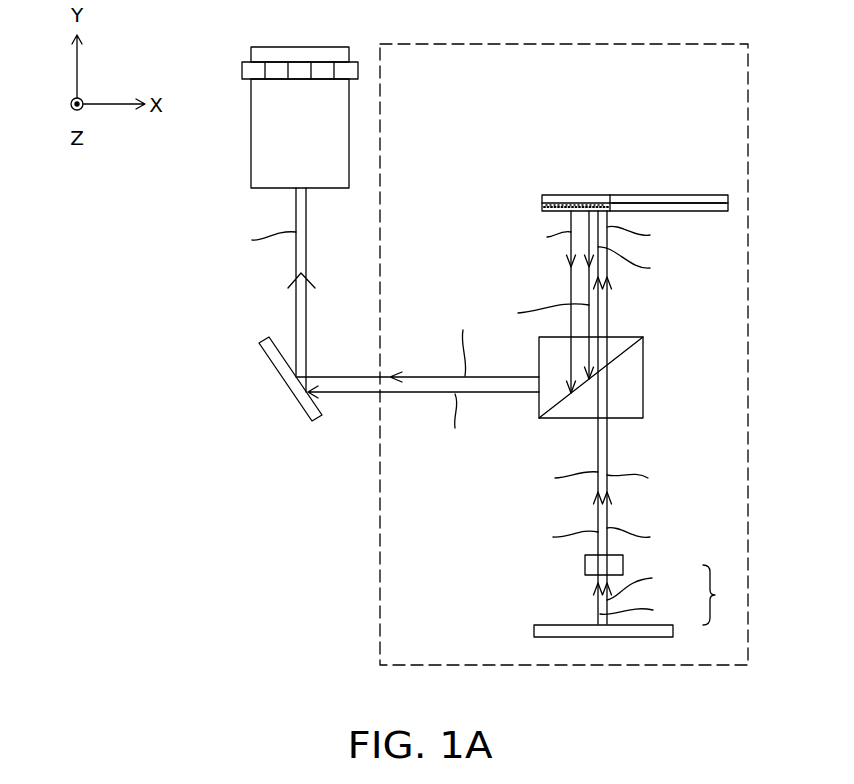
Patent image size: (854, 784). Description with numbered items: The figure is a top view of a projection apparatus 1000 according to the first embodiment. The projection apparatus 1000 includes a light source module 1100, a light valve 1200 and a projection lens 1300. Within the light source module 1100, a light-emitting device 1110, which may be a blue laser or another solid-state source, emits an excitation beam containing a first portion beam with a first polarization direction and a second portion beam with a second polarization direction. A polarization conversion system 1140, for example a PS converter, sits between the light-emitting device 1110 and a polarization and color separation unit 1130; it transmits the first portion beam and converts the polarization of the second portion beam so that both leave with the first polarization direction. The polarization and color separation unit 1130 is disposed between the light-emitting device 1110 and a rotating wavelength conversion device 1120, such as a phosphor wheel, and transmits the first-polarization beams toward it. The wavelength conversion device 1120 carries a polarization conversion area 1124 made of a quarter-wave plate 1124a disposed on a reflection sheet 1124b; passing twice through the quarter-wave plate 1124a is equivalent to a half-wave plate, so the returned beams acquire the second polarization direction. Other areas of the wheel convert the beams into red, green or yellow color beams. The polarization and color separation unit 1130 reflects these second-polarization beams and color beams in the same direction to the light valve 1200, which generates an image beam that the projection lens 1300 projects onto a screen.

The projection apparatus 1000 is at (197, 656).
The light source module 1100 is at (628, 44).
The light-emitting device 1110 is at (673, 630).
The wavelength conversion device 1120 is at (692, 183).
The polarization conversion area 1124 is at (587, 151).
The quarter-wave plate 1124a is at (540, 207).
The reflection sheet 1124b is at (616, 167).
The polarization and color separation unit 1130 is at (633, 372).
The polarization conversion system 1140 is at (585, 565).
The light valve 1200 is at (270, 353).
The projection lens 1300 is at (263, 133).